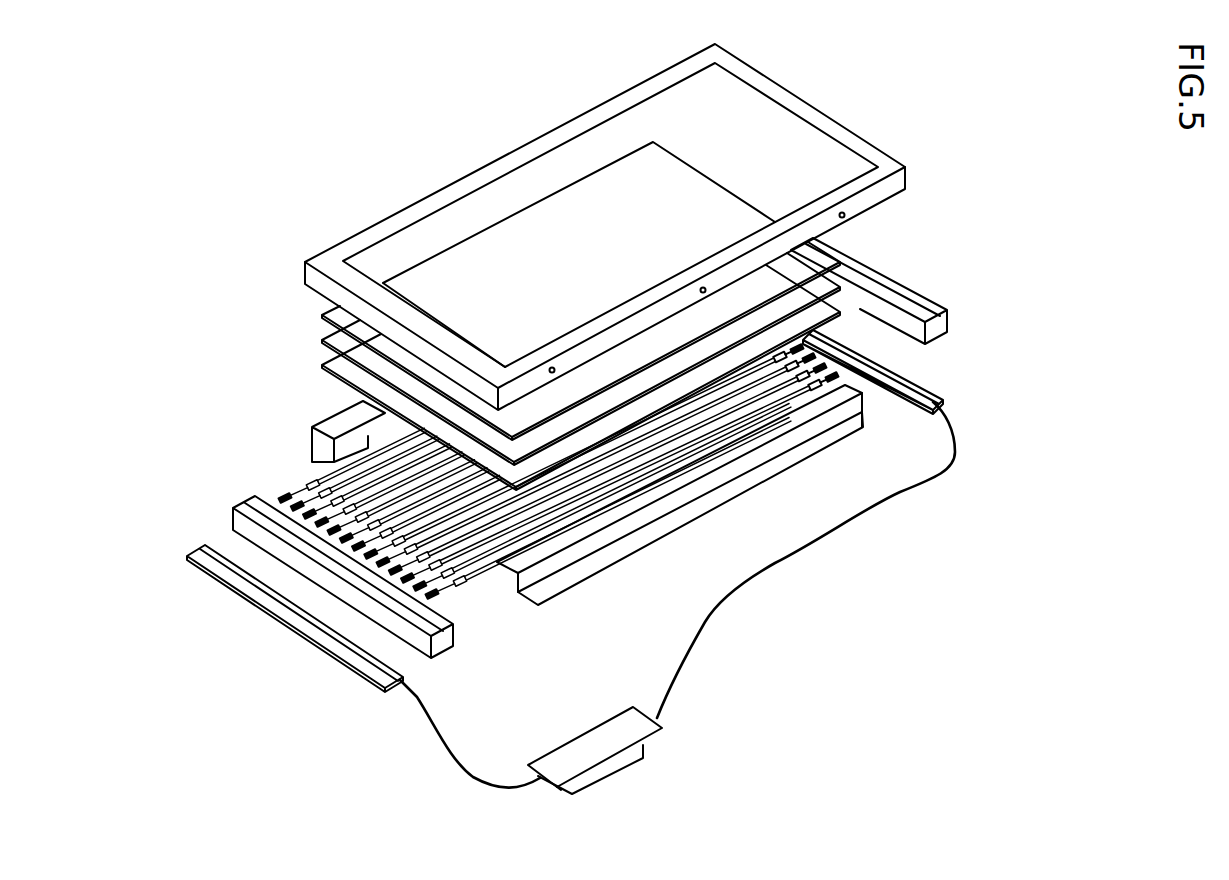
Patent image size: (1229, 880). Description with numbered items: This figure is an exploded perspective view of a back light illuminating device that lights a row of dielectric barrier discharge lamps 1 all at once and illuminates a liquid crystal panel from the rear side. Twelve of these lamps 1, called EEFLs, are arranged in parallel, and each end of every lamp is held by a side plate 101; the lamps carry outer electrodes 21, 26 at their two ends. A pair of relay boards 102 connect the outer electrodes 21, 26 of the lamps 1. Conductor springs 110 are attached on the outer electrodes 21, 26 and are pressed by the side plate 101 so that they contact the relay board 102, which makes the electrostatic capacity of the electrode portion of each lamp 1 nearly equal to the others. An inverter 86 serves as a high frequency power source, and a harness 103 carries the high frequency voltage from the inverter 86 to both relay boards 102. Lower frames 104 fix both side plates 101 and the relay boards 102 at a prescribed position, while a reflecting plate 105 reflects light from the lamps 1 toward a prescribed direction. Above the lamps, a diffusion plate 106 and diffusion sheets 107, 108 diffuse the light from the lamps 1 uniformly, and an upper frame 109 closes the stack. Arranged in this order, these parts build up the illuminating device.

The dielectric barrier discharge lamp 1 is at (340, 432).
The outer electrode 21 is at (477, 577).
The outer electrode 26 is at (850, 393).
The inverter 86 is at (557, 755).
The side plate 101 is at (233, 517).
The relay board 102 is at (933, 390).
The harness 103 is at (815, 550).
The lower frame 104 is at (558, 585).
The reflecting plate 105 is at (582, 530).
The diffusion plate 106 is at (822, 310).
The diffusion sheet 107 is at (828, 287).
The diffusion sheet 108 is at (818, 263).
The upper frame 109 is at (840, 133).
The conductor spring 110 is at (283, 497).